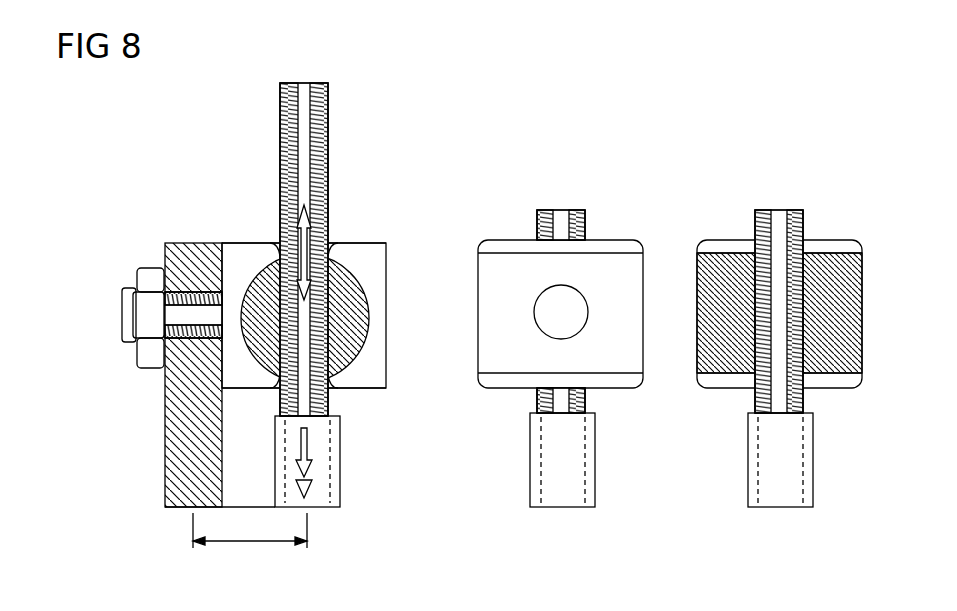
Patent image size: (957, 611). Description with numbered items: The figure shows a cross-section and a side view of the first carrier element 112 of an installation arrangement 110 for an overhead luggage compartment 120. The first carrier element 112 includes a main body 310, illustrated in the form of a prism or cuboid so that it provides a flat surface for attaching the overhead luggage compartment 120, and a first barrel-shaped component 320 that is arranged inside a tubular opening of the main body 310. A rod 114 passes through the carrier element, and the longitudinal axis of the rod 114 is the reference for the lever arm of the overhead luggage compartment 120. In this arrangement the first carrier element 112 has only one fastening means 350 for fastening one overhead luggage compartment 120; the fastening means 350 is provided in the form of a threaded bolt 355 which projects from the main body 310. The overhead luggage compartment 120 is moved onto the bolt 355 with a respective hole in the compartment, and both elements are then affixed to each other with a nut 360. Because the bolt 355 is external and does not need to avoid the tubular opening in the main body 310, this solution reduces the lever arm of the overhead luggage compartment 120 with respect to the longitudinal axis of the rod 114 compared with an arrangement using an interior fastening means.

The installation arrangement 110 is at (473, 125).
The first carrier element 112 is at (352, 241).
The rod 114 is at (303, 95).
The overhead luggage compartment 120 is at (199, 240).
The main body 310 is at (370, 255).
The first barrel-shaped component 320 is at (370, 333).
The fastening means 350 is at (582, 333).
The threaded bolt 355 is at (120, 322).
The nut 360 is at (148, 268).